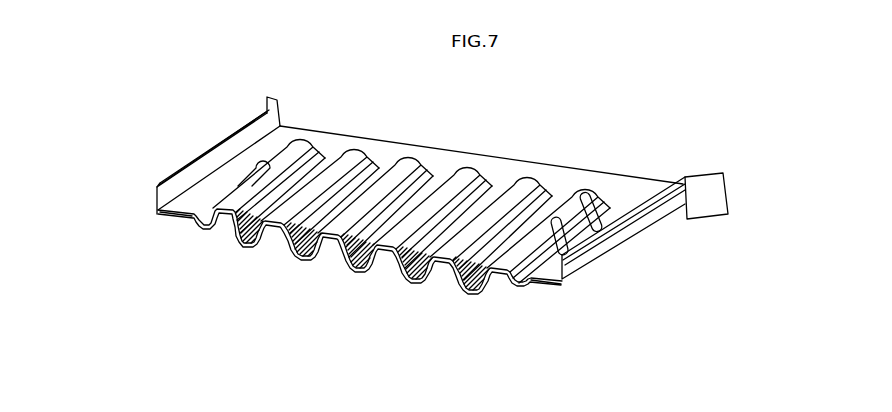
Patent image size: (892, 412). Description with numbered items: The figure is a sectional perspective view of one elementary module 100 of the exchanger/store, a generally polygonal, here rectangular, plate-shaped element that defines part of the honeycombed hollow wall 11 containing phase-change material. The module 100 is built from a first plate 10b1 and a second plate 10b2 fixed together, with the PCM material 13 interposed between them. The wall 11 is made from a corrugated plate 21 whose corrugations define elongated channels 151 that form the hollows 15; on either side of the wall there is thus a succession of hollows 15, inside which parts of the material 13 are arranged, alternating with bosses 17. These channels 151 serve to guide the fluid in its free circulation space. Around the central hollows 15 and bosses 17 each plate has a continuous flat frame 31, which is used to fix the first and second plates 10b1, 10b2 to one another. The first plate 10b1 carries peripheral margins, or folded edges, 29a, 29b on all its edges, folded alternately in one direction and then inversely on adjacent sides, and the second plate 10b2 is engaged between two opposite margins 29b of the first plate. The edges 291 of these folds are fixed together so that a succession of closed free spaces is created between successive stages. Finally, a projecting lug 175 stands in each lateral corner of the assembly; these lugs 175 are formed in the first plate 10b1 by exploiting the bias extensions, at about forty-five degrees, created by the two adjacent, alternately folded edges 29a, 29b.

The elementary module 100 is at (155, 217).
The wall 11 is at (288, 258).
The PCM material 13 is at (480, 278).
The hollows 15 is at (350, 261).
The bosses 17 is at (303, 175).
The elongated channels 151 is at (412, 187).
The corrugated plate 21 is at (228, 138).
The edges of the folds 291 is at (257, 120).
The projecting lug 175 is at (272, 97).
The margin 29a is at (677, 211).
The margin 29b is at (165, 182).
The continuous flat frame 31 is at (182, 212).
The first plate 10b1 is at (582, 281).
The second plate 10b2 is at (560, 188).